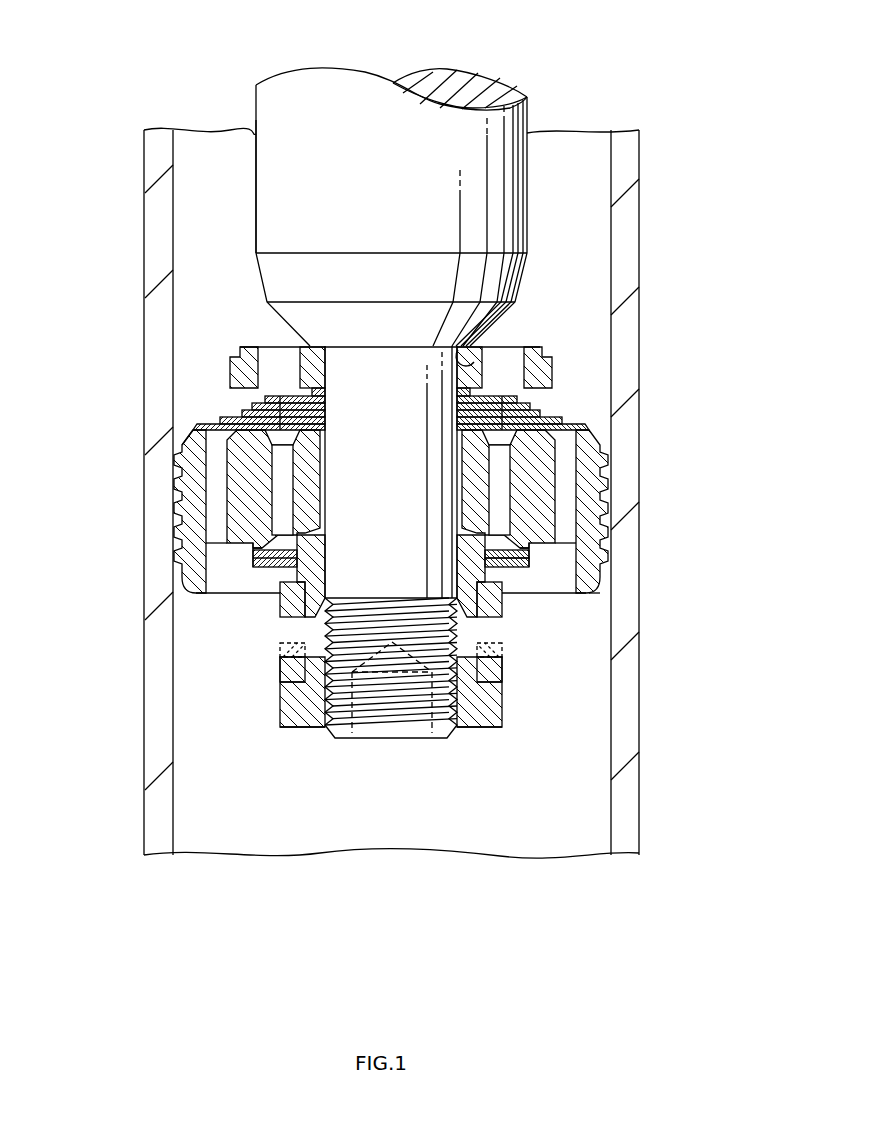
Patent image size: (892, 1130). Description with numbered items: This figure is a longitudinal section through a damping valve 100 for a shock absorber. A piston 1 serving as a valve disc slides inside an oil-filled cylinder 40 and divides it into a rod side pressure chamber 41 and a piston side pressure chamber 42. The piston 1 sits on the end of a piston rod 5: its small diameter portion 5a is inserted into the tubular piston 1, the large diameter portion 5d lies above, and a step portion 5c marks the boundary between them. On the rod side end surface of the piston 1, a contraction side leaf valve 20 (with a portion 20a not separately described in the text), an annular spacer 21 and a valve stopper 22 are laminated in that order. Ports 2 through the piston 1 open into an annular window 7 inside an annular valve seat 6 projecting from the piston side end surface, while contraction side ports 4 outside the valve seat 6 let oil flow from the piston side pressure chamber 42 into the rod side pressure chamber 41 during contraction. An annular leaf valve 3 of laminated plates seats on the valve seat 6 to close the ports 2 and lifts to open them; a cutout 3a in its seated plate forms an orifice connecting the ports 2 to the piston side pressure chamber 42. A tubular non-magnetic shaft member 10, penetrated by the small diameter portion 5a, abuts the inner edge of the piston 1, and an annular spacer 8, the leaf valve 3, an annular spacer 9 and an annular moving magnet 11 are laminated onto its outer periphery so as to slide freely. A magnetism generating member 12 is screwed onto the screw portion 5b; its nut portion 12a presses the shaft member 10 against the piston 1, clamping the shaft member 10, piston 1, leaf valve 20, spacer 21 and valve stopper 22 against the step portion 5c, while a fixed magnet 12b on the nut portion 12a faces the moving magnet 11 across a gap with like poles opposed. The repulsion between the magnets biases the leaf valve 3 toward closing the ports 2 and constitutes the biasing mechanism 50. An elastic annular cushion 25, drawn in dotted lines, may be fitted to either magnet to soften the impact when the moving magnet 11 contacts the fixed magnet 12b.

The piston 1 is at (607, 468).
The port 2 is at (285, 495).
The leaf valve 3 is at (250, 568).
The cutout 3a is at (253, 548).
The contraction side port 4 is at (197, 440).
The piston rod 5 is at (530, 105).
The small diameter portion 5a is at (345, 465).
The screw portion 5b is at (380, 712).
The step portion 5c is at (470, 362).
The head portion 5d is at (295, 235).
The valve seat 6 is at (523, 553).
The annular window 7 is at (540, 612).
The annular spacer 8 is at (483, 532).
The annular spacer 9 is at (248, 562).
The shaft member 10 is at (515, 660).
The moving magnet 11 is at (283, 597).
The magnetism generating member 12 is at (278, 735).
The nut portion 12a is at (312, 713).
The fixed magnet 12b is at (285, 672).
The contraction side leaf valve 20 is at (568, 410).
The shim 20a is at (290, 402).
The annular spacer 21 is at (470, 380).
The valve stopper 22 is at (540, 367).
The annular cushion 25 is at (280, 648).
The cylinder 40 is at (632, 155).
The rod side pressure chamber 41 is at (205, 168).
The piston side pressure chamber 42 is at (215, 785).
The biasing mechanism 50 is at (503, 690).
The damping valve 100 is at (540, 575).